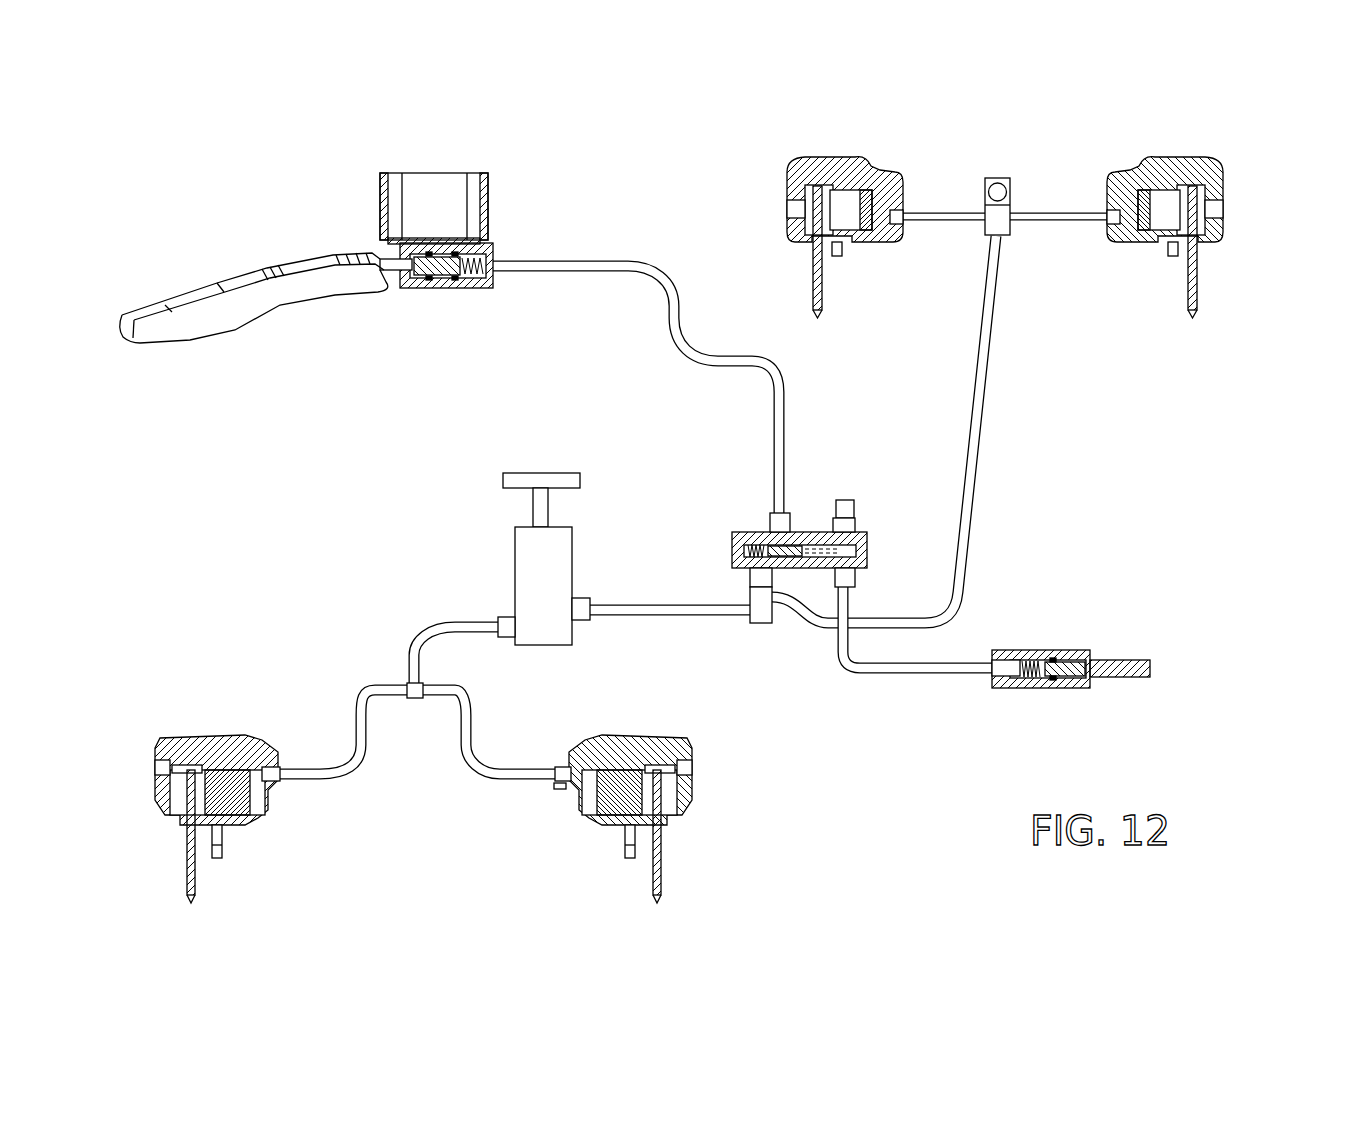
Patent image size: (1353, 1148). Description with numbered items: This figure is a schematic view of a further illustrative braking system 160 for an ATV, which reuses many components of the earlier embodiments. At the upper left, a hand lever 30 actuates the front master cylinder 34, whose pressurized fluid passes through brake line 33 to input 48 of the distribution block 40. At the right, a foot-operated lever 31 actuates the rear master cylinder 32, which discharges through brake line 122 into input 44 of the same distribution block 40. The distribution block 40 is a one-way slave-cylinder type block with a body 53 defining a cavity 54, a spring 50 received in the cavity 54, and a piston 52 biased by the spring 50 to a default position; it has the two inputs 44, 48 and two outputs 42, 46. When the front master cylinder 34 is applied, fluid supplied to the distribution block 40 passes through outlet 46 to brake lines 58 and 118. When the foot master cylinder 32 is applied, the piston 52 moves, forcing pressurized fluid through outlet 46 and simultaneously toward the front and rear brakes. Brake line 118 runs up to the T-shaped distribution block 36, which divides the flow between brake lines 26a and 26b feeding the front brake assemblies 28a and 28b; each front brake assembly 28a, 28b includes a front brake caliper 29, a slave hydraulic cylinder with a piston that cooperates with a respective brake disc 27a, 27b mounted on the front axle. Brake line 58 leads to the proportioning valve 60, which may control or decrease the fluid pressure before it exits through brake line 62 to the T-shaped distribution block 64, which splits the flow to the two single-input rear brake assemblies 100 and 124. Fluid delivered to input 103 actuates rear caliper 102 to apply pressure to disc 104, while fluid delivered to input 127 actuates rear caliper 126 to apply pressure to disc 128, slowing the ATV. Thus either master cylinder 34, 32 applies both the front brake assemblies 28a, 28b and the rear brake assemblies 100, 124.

The braking system 160 is at (682, 164).
The front master cylinder 34 is at (508, 187).
The hand lever 30 is at (245, 303).
The brake line 33 is at (678, 322).
The front brake assembly 28a is at (850, 220).
The front brake assembly 28b is at (1203, 223).
The brake line 26a is at (938, 212).
The brake line 26b is at (1068, 223).
The brake disc 27a is at (812, 273).
The brake disc 27b is at (1199, 270).
The front brake caliper 29 is at (853, 266).
The distribution block 36 is at (1016, 176).
The brake line 118 is at (988, 393).
The distribution block 40 is at (812, 551).
The output 42 is at (852, 524).
The input 44 is at (856, 582).
The output 46 is at (750, 580).
The input 48 is at (768, 527).
The spring 50 is at (752, 550).
The piston 52 is at (815, 543).
The body 53 is at (868, 556).
The cavity 54 is at (770, 560).
The brake line 58 is at (632, 604).
The proportioning valve 60 is at (486, 569).
The brake line 62 is at (408, 668).
The distribution block 64 is at (425, 690).
The rear brake assembly 100 is at (621, 783).
The rear caliper 102 is at (617, 861).
The input 103 is at (562, 770).
The disc 104 is at (662, 853).
The brake line 122 is at (958, 664).
The rear brake assembly 124 is at (223, 776).
The rear caliper 126 is at (237, 830).
The input 127 is at (288, 764).
The disc 128 is at (186, 862).
The rear master cylinder 32 is at (1092, 631).
The lever 31 is at (1152, 672).